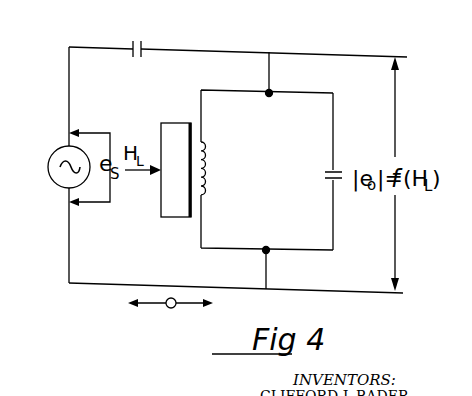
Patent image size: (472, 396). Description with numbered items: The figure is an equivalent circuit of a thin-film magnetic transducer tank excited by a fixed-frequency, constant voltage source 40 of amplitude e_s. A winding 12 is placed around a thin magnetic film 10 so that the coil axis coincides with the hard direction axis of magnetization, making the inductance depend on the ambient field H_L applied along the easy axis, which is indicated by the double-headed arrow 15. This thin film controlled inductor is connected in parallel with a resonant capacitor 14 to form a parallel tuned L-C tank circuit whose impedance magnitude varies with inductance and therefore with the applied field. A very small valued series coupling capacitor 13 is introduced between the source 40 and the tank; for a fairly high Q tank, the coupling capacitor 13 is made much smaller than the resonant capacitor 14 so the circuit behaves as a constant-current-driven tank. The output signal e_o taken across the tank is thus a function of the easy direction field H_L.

The thin magnetic film 10 is at (173, 219).
The winding 12 is at (208, 172).
The series coupling capacitor 13 is at (142, 41).
The resonant capacitor 14 is at (323, 174).
The double-headed arrow 15 is at (153, 309).
The constant voltage source 40 is at (57, 185).